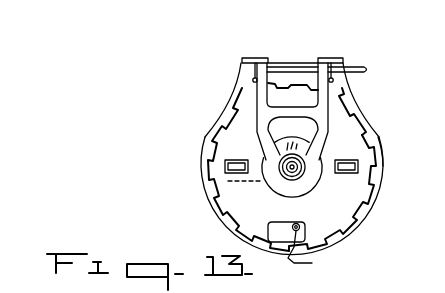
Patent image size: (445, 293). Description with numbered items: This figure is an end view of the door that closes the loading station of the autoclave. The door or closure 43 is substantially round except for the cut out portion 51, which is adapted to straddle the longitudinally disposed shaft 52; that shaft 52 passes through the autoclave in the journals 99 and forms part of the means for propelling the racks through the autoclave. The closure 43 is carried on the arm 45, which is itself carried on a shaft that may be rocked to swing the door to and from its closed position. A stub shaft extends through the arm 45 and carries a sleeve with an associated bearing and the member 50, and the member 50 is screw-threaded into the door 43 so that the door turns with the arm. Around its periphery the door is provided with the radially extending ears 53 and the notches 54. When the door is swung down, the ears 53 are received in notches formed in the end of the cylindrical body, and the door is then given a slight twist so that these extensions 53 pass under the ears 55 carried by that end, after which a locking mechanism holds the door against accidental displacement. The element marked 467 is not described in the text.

The closure 43 is at (232, 122).
The arm 45 is at (267, 140).
The bar 467 is at (309, 57).
The member 50 is at (311, 182).
The cut out portion 51 is at (279, 221).
The shaft 52 is at (309, 251).
The ears 53 is at (367, 127).
The notches 54 is at (348, 113).
The ears 55 is at (376, 139).
The journals 99 is at (300, 225).